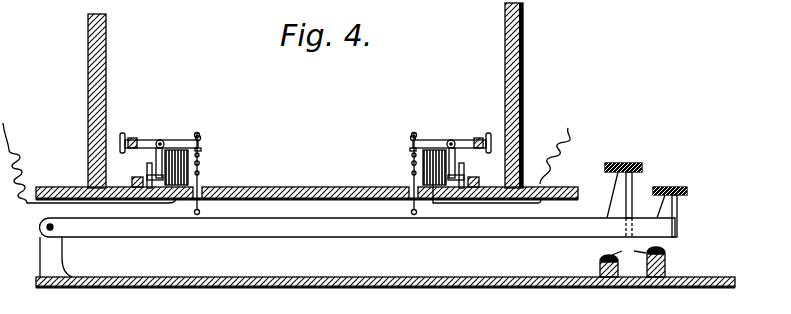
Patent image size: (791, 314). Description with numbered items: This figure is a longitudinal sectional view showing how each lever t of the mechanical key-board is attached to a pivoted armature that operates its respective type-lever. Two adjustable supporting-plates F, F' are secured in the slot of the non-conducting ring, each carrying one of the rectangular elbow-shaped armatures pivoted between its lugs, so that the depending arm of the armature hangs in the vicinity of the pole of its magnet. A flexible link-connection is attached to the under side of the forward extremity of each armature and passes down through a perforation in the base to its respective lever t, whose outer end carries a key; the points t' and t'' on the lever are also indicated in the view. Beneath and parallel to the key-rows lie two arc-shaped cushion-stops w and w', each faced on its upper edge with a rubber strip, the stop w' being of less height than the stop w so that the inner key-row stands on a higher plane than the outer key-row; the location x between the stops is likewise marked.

The adjustable supporting-plate F is at (160, 136).
The adjustable supporting-plate F' is at (450, 136).
The lever t is at (358, 228).
The pivot of lever bar t' is at (31, 231).
The support spring of lever bar t'' is at (56, 257).
The cushion-stop w is at (670, 262).
The cushion-stop w' is at (595, 263).
The gap between contact posts x is at (629, 247).